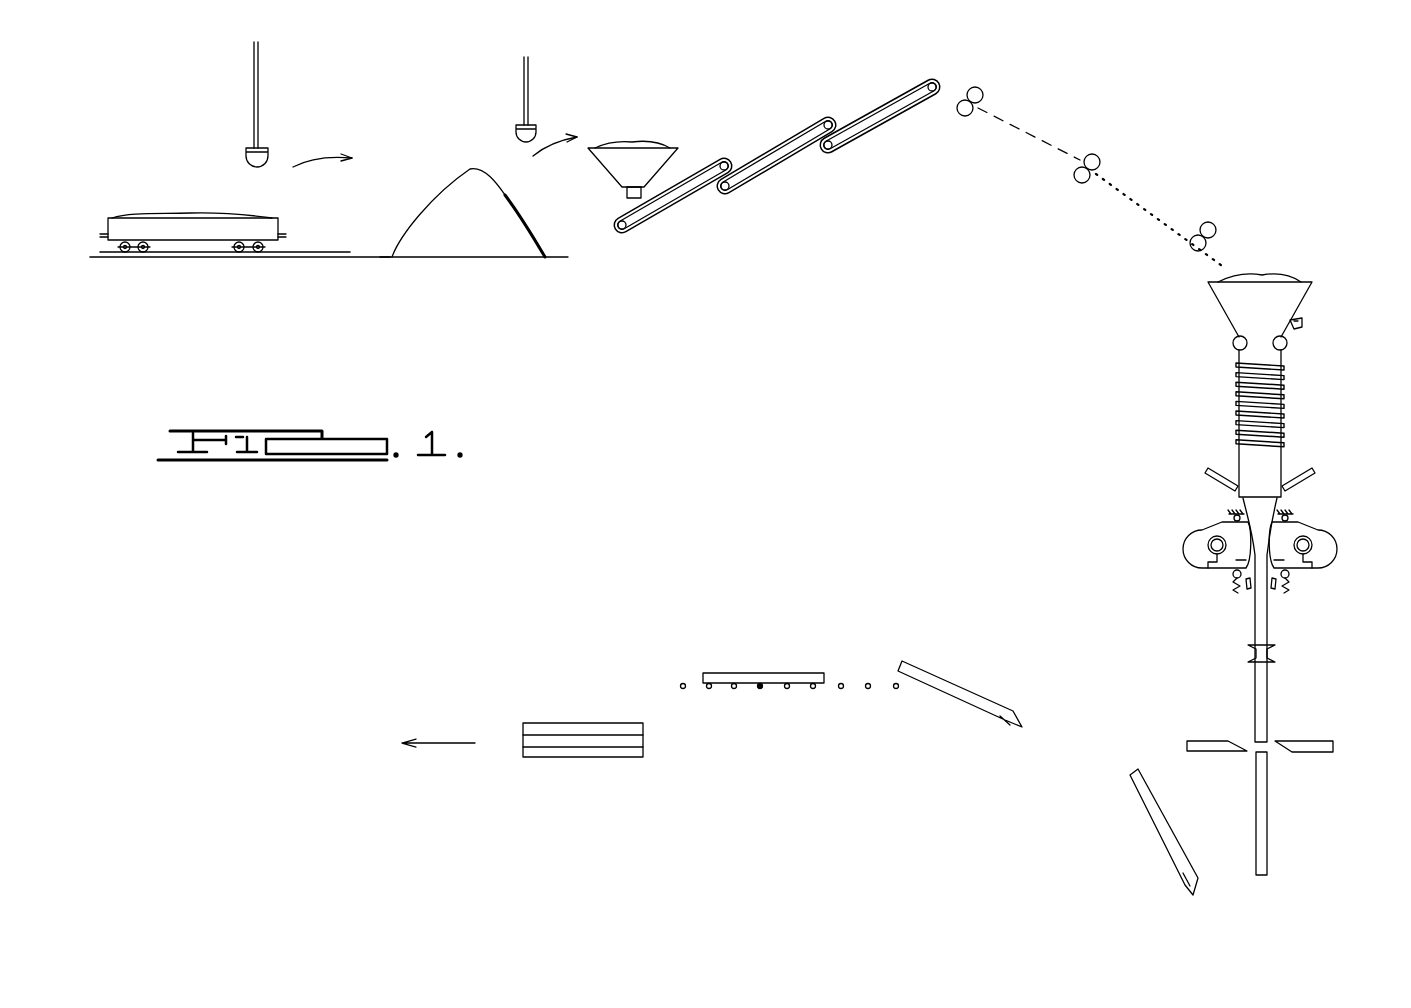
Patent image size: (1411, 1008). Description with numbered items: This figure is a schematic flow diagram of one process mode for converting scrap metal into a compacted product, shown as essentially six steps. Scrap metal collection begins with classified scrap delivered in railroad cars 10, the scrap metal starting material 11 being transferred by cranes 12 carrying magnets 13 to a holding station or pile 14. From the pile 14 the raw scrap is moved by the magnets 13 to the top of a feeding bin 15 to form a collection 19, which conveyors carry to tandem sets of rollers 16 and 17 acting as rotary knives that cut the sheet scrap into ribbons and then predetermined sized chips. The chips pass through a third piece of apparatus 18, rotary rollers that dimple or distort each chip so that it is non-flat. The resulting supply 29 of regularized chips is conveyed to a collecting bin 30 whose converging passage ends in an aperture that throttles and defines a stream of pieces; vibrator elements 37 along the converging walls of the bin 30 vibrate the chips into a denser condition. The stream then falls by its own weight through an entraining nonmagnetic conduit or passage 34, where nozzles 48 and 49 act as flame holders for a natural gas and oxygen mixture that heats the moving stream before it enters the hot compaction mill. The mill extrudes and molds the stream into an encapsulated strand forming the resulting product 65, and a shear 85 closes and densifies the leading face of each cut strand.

The railroad cars 10 is at (203, 228).
The scrap metal starting material 11 is at (160, 216).
The cranes 12 is at (272, 142).
The magnets 13 is at (268, 157).
The holding station or pile 14 is at (477, 238).
The feeding bin 15 is at (673, 161).
The first set of rollers 16 is at (985, 84).
The second set of rollers 17 is at (1105, 156).
The third piece of apparatus 18 is at (1220, 226).
The collection of scrap pieces 19 is at (636, 143).
The supply of regularized chips or blocks 29 is at (1229, 279).
The collecting bin 30 is at (1221, 306).
The entraining nonmagnetic conduit or passage 34 is at (1280, 463).
The vibrator elements 37 is at (1301, 322).
The nozzle 48 is at (1305, 480).
The nozzle 49 is at (1277, 589).
The resulting product 65 is at (1228, 795).
The shear 85 is at (1315, 746).